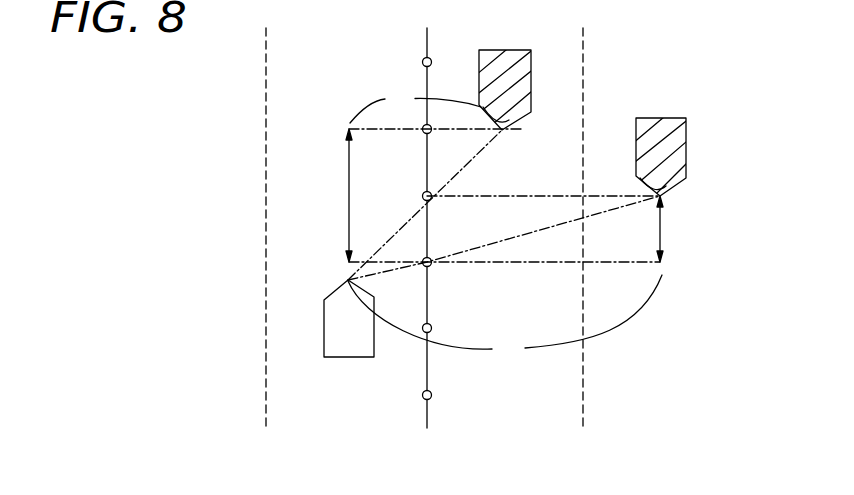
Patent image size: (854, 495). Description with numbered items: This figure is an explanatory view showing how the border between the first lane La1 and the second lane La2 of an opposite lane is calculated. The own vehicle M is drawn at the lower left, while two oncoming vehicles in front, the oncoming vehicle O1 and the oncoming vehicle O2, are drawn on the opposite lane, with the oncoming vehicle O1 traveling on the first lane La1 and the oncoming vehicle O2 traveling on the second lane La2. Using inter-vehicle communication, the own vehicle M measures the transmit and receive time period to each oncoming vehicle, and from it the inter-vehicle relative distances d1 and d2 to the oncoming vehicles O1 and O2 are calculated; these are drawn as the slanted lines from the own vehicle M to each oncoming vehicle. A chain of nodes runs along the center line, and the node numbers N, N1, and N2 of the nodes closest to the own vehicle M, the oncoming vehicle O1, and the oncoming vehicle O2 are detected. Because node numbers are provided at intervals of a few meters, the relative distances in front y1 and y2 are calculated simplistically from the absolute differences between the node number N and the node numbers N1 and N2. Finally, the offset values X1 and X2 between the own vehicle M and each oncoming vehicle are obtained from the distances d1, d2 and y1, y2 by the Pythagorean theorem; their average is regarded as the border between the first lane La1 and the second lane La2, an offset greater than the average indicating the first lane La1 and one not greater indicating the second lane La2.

The oncoming vehicle in front O1 is at (670, 118).
The oncoming vehicle in front O2 is at (515, 50).
The own vehicle M is at (347, 357).
The node number N is at (431, 266).
The node number N1 is at (422, 196).
The node number N2 is at (423, 132).
The offset value X1 is at (505, 318).
The offset value X2 is at (415, 103).
The relative distance in front y1 is at (672, 229).
The relative distance in front y2 is at (337, 195).
The inter-vehicle relative distance d1 is at (504, 238).
The inter-vehicle relative distance d2 is at (425, 205).
The first lane La1 is at (623, 395).
The second lane La2 is at (505, 398).